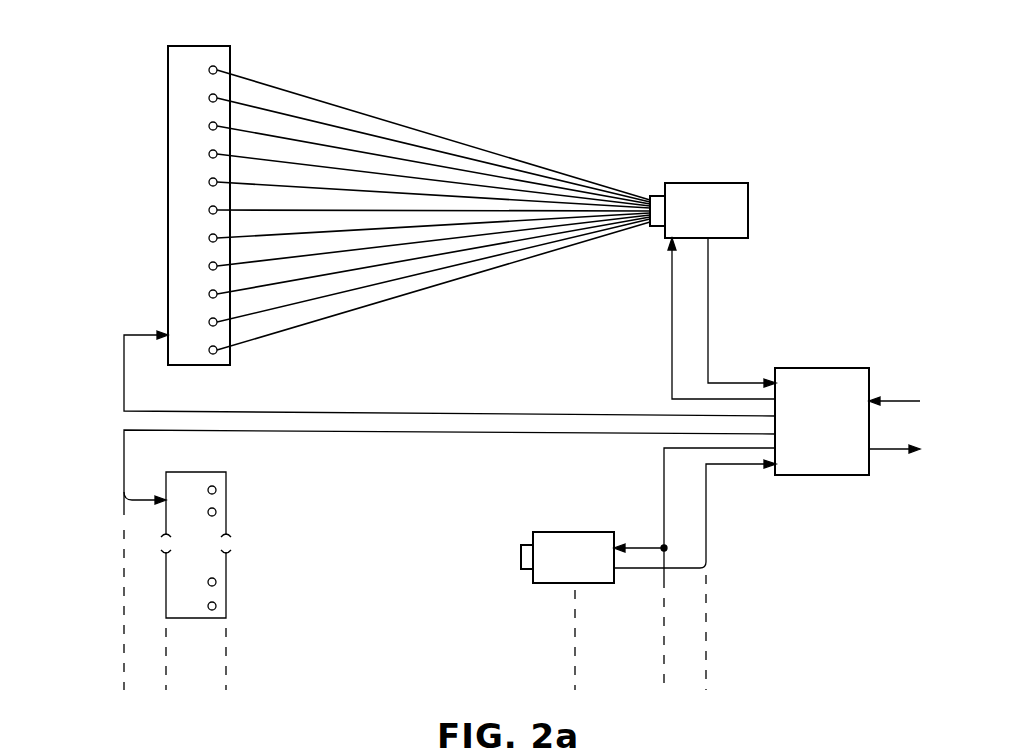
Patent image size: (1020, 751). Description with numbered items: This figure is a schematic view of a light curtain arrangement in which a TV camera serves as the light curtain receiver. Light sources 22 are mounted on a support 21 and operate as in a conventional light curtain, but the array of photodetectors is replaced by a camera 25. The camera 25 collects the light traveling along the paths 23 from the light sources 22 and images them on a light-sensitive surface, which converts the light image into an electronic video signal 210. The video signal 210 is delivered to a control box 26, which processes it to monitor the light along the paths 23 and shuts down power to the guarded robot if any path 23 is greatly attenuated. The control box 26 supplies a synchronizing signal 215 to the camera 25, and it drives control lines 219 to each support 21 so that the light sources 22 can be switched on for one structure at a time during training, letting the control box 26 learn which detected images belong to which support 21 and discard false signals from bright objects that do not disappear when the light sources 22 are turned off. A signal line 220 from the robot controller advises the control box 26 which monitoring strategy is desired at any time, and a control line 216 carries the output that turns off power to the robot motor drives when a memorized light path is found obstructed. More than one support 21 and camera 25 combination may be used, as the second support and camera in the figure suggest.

The support 21 is at (185, 46).
The light sources 22 is at (218, 70).
The paths 23 is at (378, 117).
The camera 25 is at (686, 183).
The control box 26 is at (792, 368).
The video signal 210 is at (709, 271).
The synchronizing signal 215 is at (670, 300).
The control lines 219 is at (124, 370).
The signal line 220 is at (897, 400).
The control line 216 is at (894, 452).